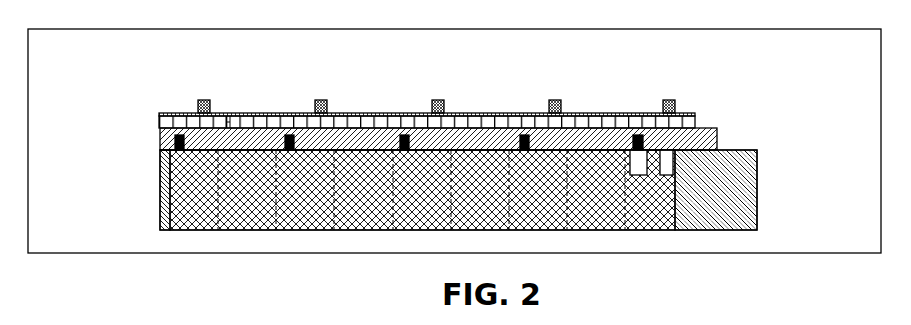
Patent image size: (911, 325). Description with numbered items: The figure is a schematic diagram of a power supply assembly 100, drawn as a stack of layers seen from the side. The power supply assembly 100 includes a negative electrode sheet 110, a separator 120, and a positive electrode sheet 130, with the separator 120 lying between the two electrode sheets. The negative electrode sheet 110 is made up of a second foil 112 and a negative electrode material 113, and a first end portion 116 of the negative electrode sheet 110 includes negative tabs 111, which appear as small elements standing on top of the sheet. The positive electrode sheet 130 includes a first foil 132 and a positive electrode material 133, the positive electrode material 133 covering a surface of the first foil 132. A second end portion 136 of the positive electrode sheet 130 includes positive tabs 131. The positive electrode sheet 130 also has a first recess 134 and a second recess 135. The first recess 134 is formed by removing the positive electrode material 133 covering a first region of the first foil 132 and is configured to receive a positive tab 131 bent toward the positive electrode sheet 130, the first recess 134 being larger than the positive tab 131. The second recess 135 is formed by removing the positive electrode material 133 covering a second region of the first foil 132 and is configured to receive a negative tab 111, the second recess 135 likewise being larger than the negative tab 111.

The power supply assembly 100 is at (80, 70).
The negative electrode sheet 110 is at (95, 80).
The negative tab 111 is at (200, 100).
The second foil 112 is at (159, 114).
The negative electrode material 113 is at (173, 123).
The first end portion 116 is at (230, 113).
The separator 120 is at (717, 129).
The positive electrode sheet 130 is at (816, 140).
The positive tab 131 is at (643, 141).
The first foil 132 is at (735, 198).
The positive electrode material 133 is at (668, 216).
The first recess 134 is at (647, 159).
The second recess 135 is at (673, 168).
The second end portion 136 is at (238, 150).